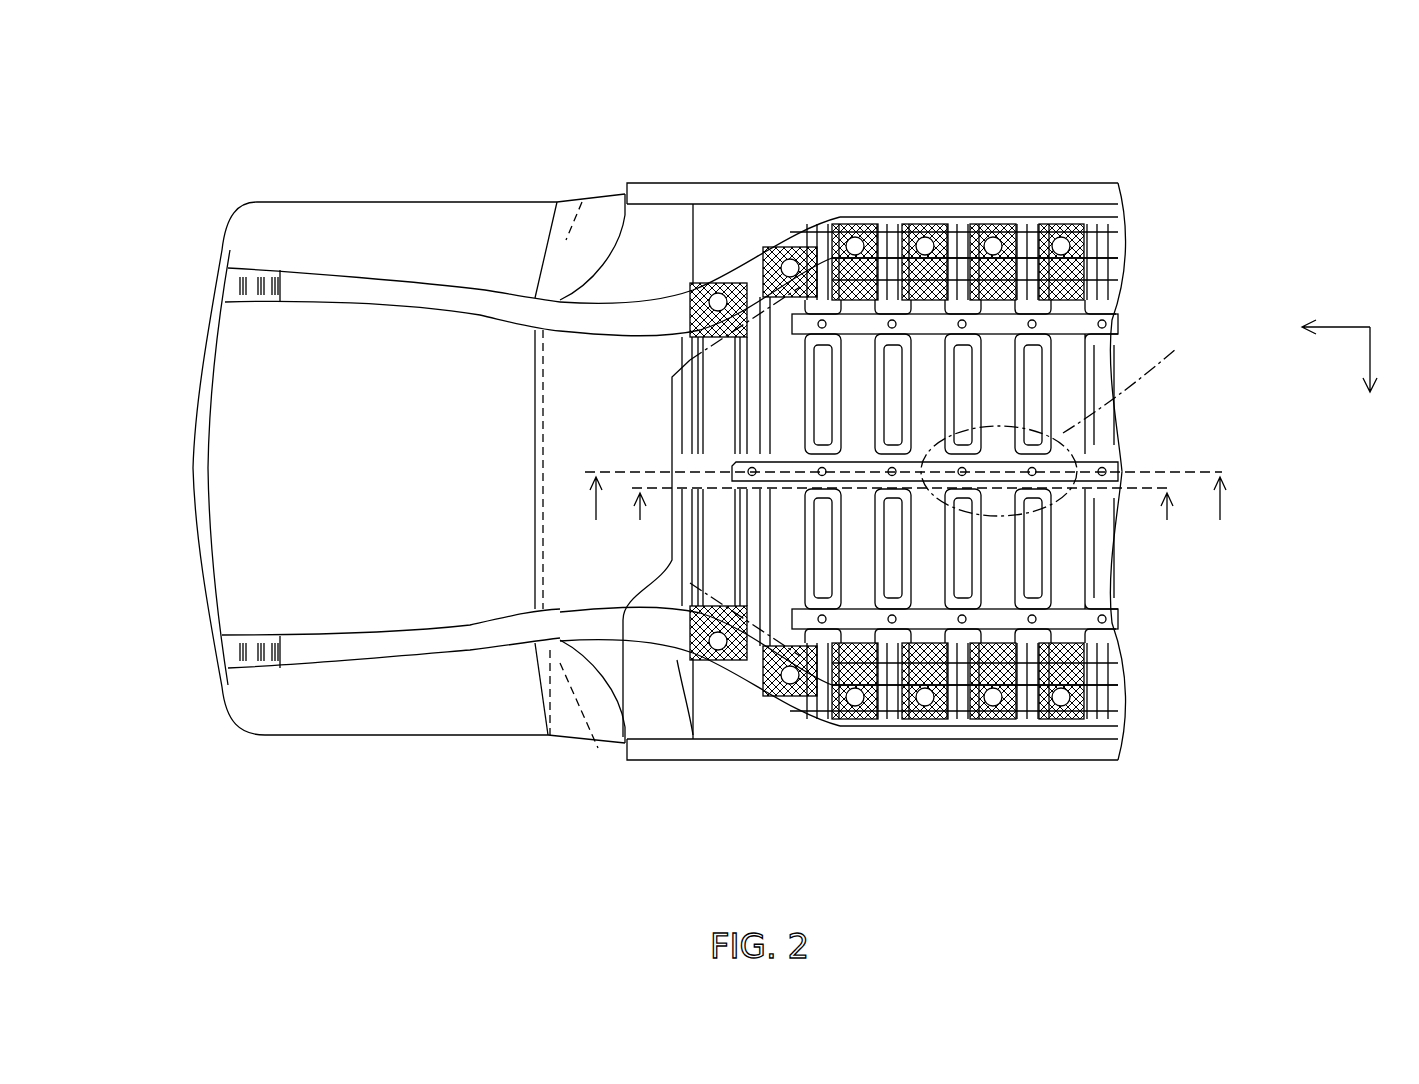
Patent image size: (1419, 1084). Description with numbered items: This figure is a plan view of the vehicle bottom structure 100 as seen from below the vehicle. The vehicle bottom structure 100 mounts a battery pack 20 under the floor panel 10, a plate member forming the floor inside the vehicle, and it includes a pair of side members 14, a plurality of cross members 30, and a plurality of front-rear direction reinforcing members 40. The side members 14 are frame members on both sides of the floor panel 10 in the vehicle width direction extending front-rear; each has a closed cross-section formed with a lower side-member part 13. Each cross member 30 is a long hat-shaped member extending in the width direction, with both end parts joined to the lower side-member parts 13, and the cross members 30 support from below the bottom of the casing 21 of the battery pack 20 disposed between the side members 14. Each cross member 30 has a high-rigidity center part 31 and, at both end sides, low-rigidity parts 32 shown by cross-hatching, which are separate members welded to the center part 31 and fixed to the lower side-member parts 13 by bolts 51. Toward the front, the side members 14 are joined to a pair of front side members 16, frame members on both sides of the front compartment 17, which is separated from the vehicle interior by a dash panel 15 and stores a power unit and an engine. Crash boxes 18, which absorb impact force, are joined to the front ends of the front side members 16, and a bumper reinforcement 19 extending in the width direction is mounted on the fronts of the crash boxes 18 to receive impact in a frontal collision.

The vehicle bottom structure 100 is at (748, 453).
The floor panel 10 is at (723, 238).
The lower side-member part 13 is at (1039, 454).
The side member 14 is at (1117, 250).
The dash panel 15 is at (583, 200).
The front side member 16 is at (486, 298).
The front compartment 17 is at (395, 482).
The crash box 18 is at (253, 662).
The bumper reinforcement 19 is at (197, 535).
The battery pack 20 is at (605, 746).
The casing 21 is at (600, 750).
The cross member 30 is at (900, 588).
The center part 31 is at (855, 540).
The low-rigidity part 32 is at (847, 723).
The front-rear direction reinforcing member 40 is at (1140, 465).
The bolt 51 is at (935, 722).